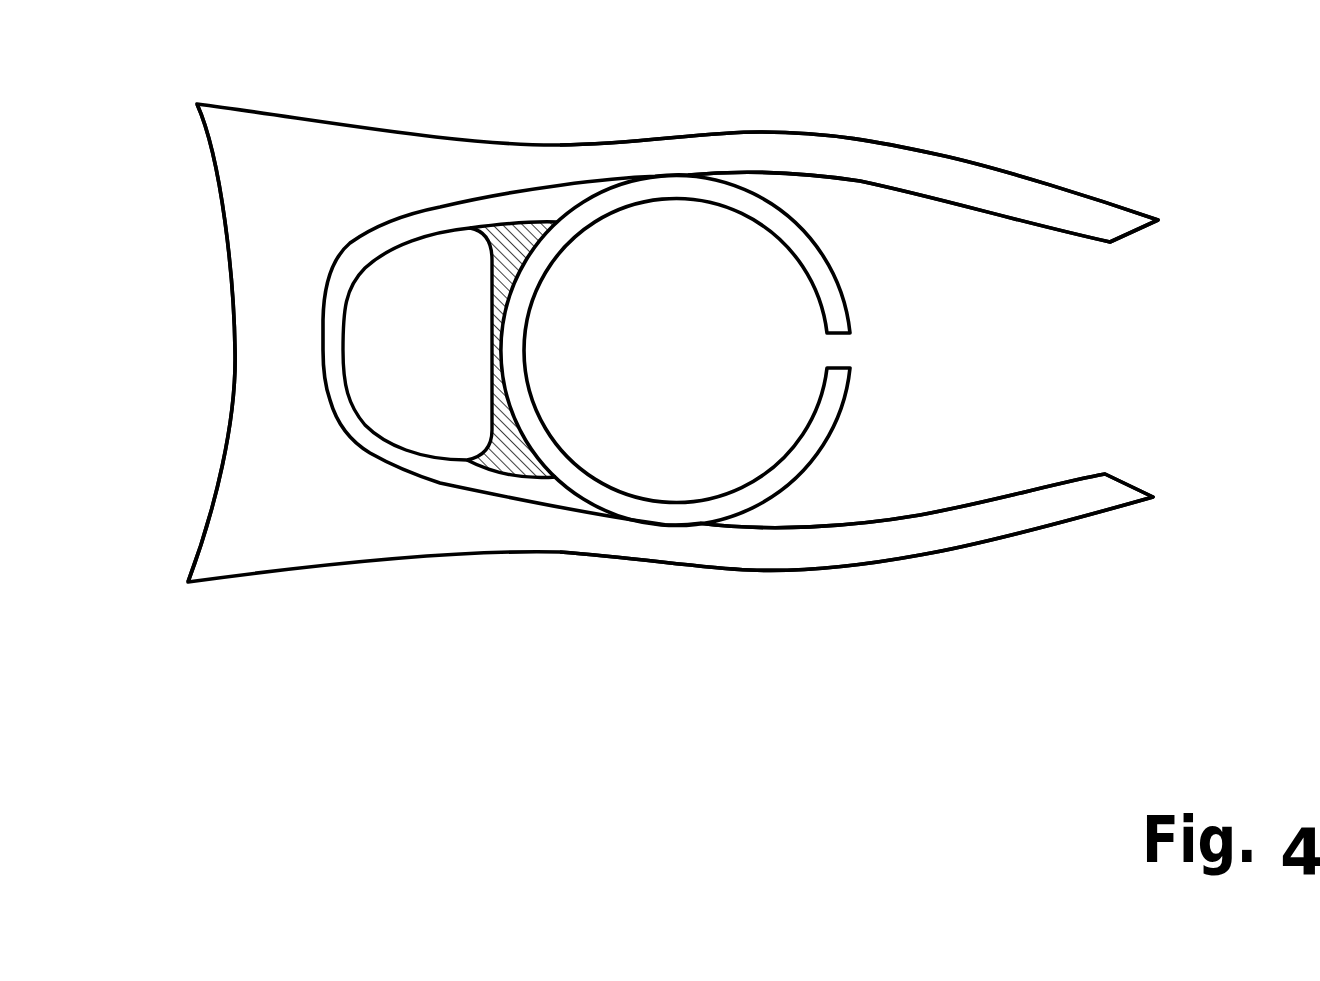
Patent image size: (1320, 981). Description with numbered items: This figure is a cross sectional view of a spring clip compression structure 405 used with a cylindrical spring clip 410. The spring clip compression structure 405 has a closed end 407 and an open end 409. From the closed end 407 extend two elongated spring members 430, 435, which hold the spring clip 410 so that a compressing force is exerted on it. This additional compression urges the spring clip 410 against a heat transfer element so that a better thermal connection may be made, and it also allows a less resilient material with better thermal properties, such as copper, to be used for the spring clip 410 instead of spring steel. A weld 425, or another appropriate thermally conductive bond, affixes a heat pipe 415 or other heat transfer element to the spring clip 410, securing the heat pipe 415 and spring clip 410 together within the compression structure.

The spring clip compression structure 405 is at (183, 137).
The closed end 407 is at (195, 333).
The open end 409 is at (1130, 377).
The cylindrical spring clip 410 is at (849, 320).
The heat pipe 415 is at (446, 361).
The weld 425 is at (505, 228).
The elongated spring member 430 is at (1097, 197).
The elongated spring member 435 is at (1083, 520).